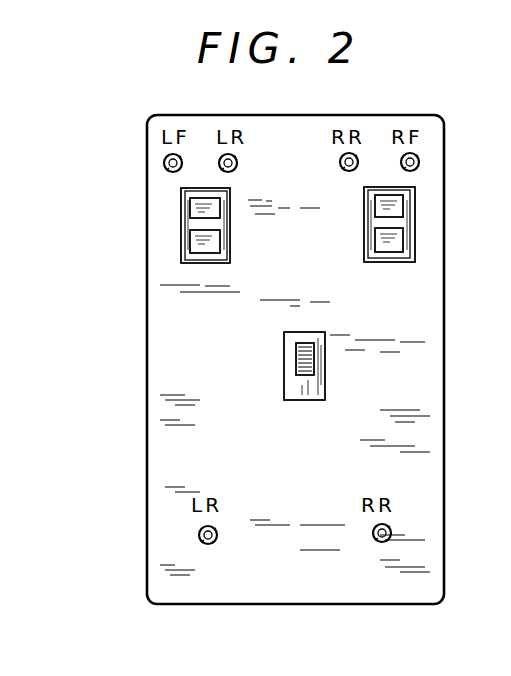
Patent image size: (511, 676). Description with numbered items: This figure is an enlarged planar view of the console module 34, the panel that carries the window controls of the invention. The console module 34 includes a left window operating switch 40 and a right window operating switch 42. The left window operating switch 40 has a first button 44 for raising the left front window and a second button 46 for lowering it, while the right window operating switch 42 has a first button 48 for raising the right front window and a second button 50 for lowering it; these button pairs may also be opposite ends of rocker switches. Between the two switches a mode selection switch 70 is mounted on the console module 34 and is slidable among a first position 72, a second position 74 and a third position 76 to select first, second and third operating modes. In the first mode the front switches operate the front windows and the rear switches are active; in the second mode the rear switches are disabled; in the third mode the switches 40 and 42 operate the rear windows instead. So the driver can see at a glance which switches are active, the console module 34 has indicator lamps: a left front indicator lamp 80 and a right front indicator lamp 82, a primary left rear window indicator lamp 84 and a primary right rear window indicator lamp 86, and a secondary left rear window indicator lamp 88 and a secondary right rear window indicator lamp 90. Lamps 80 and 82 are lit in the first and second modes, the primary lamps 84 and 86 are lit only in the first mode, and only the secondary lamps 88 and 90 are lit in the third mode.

The console module 34 is at (155, 442).
The left window operating switch 40 is at (189, 230).
The right window operating switch 42 is at (395, 231).
The first button 44 is at (190, 207).
The second button 46 is at (190, 251).
The first button 48 is at (401, 208).
The second button 50 is at (363, 222).
The mode selection switch 70 is at (294, 378).
The first position 72 is at (277, 346).
The second position 74 is at (277, 361).
The third position 76 is at (272, 385).
The left front indicator lamp 80 is at (164, 167).
The right front indicator lamp 82 is at (419, 164).
The primary left rear window indicator lamp 84 is at (212, 544).
The primary right rear window indicator lamp 86 is at (378, 542).
The secondary left rear window indicator lamp 88 is at (237, 166).
The secondary right rear window indicator lamp 90 is at (343, 171).